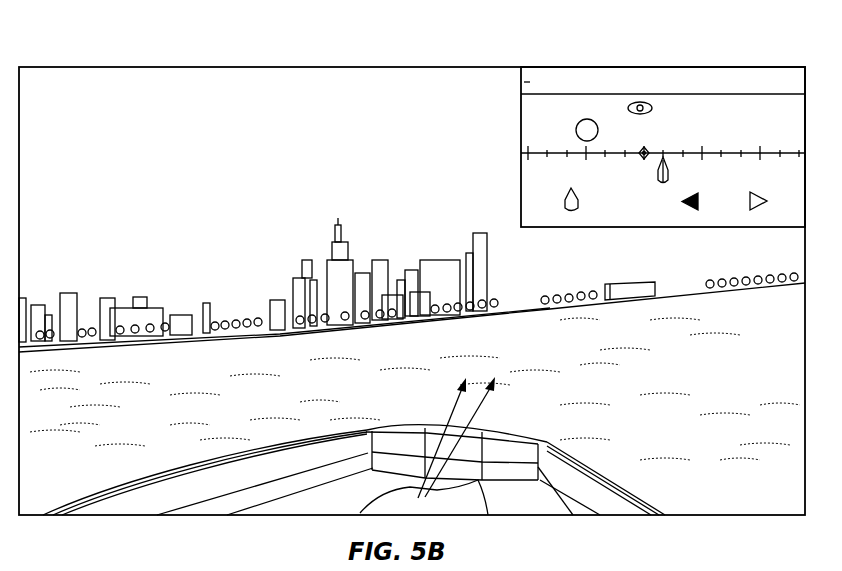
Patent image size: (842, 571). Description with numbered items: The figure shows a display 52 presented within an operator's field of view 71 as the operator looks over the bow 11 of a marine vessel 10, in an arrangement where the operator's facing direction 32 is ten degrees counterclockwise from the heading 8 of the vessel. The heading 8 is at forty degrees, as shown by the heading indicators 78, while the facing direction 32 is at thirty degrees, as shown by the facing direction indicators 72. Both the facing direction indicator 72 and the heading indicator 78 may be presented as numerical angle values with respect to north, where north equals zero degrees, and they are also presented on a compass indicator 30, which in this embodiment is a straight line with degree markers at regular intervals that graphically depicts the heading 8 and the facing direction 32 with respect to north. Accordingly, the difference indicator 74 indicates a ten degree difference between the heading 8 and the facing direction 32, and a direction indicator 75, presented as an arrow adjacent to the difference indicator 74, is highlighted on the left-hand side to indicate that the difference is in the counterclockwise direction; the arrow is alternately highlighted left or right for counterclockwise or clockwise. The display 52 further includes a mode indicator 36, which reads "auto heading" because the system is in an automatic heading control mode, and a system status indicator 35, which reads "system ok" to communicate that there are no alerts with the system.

The operator's field of view 71 is at (98, 62).
The display 52 is at (629, 67).
The system status indicator 35 is at (522, 82).
The mode indicator 36 is at (728, 70).
The compass indicator 30 is at (577, 121).
The facing direction indicator 72 is at (645, 149).
The heading indicator 78 is at (667, 183).
The direction indicator 75 is at (685, 208).
The difference indicator 74 is at (728, 214).
The marine vessel 10 is at (610, 467).
The bow 11 is at (498, 428).
The facing direction 32 is at (457, 402).
The heading 8 is at (483, 402).